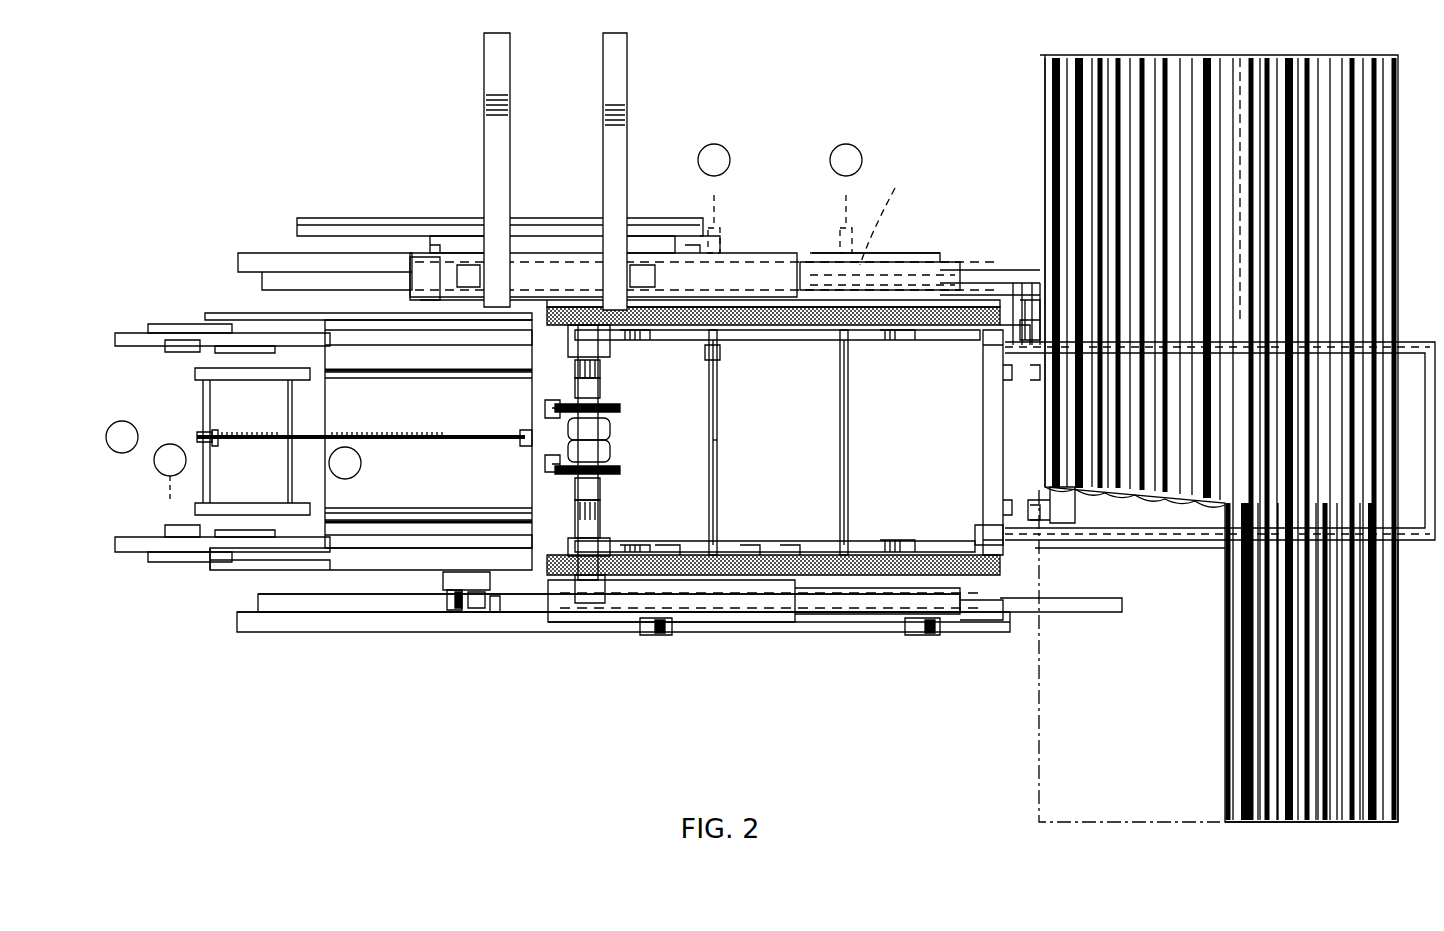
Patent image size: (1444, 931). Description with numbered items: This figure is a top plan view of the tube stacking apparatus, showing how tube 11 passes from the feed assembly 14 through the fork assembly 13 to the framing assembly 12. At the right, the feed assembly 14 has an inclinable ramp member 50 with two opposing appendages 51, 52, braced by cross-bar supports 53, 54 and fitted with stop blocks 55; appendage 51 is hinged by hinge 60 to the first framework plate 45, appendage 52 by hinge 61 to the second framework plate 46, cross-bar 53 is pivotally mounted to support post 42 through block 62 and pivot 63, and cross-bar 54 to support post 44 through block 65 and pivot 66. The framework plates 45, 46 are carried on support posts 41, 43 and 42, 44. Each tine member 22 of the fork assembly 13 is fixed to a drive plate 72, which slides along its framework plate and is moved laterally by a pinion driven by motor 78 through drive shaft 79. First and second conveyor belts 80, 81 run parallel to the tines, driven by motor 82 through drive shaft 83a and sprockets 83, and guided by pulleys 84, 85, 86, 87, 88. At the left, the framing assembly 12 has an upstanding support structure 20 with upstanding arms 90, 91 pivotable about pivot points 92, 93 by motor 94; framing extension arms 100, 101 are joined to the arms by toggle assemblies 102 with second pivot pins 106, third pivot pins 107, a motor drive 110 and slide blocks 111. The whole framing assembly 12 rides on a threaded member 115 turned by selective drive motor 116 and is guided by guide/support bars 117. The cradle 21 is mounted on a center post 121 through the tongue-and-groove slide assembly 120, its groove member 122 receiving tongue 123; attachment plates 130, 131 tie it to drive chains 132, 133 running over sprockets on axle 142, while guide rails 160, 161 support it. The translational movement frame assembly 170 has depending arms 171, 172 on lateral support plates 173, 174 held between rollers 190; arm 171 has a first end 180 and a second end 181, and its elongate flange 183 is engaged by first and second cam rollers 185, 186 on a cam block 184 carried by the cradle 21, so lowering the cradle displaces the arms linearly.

The tube 11 is at (1090, 56).
The framing assembly 12 is at (185, 590).
The fork assembly 13 is at (950, 245).
The tube storage or feed assembly 14 is at (1413, 240).
The upstanding support structure 20 is at (170, 563).
The cradle 21 is at (215, 600).
The tine member 22 is at (955, 268).
The support post 41 is at (596, 603).
The support post 42 is at (1012, 622).
The support post 43 is at (598, 300).
The support post 44 is at (1003, 300).
The first framework plate 45 is at (842, 600).
The second framework plate 46 is at (805, 300).
The ramp member 50 is at (1418, 585).
The appendage 51 is at (1436, 540).
The appendage 52 is at (1430, 342).
The cross-bar support 53 is at (1222, 540).
The cross-bar support 54 is at (1242, 62).
The stop block 55 is at (1030, 375).
The hinge 60 is at (985, 538).
The hinge 61 is at (985, 347).
The block 62 is at (1130, 556).
The pivot 63 is at (1055, 560).
The block 65 is at (1030, 320).
The pivot 66 is at (1040, 300).
The drive plate 72 is at (1138, 626).
The motor 78 is at (846, 144).
The drive shaft 79 is at (840, 378).
The first conveyor belt 80 is at (722, 605).
The second conveyor belt 81 is at (720, 295).
The motor 82 is at (714, 144).
The sprocket 83 is at (718, 380).
The drive shaft 83a is at (718, 450).
The pulley 84 is at (690, 556).
The pulley 85 is at (790, 556).
The pulley 86 is at (960, 550).
The pulley 87 is at (795, 556).
The pulley 88 is at (470, 622).
The upstanding arm 90 is at (165, 590).
The upstanding arm 91 is at (147, 330).
The pivot point 92 is at (332, 555).
The pivot point 93 is at (335, 352).
The motor 94 is at (362, 470).
The framing extension arm 100 is at (232, 492).
The framing extension arm 101 is at (228, 412).
The toggle assembly 102 is at (190, 378).
The second pivot pin 106 is at (168, 348).
The third pivot pin 107 is at (230, 428).
The motor drive 110 is at (160, 462).
The slide block 111 is at (185, 330).
The threaded member 115 is at (380, 435).
The selective drive motor 116 is at (138, 428).
The guide/support bar 117 is at (372, 372).
The tongue-and-groove slide assembly 120 is at (718, 430).
The center post 121 is at (610, 455).
The groove member 122 is at (548, 406).
The tongue 123 is at (700, 440).
The attachment plate 130 is at (606, 508).
The attachment plate 131 is at (605, 380).
The drive chain 132 is at (605, 478).
The drive chain 133 is at (602, 405).
The axle 142 is at (548, 470).
The guide rail 160 is at (560, 550).
The guide rail 161 is at (560, 348).
The translational movement frame assembly 170 is at (382, 650).
The depending arm 171 is at (290, 632).
The depending arm 172 is at (300, 253).
The lateral support plate 173 is at (780, 626).
The lateral support plate 174 is at (900, 258).
The first end 180 is at (248, 600).
The second end 181 is at (478, 620).
The elongate flange 183 is at (242, 218).
The cam block 184 is at (447, 592).
The first cam roller 185 is at (458, 612).
The second cam roller 186 is at (488, 612).
The roller 190 is at (655, 638).